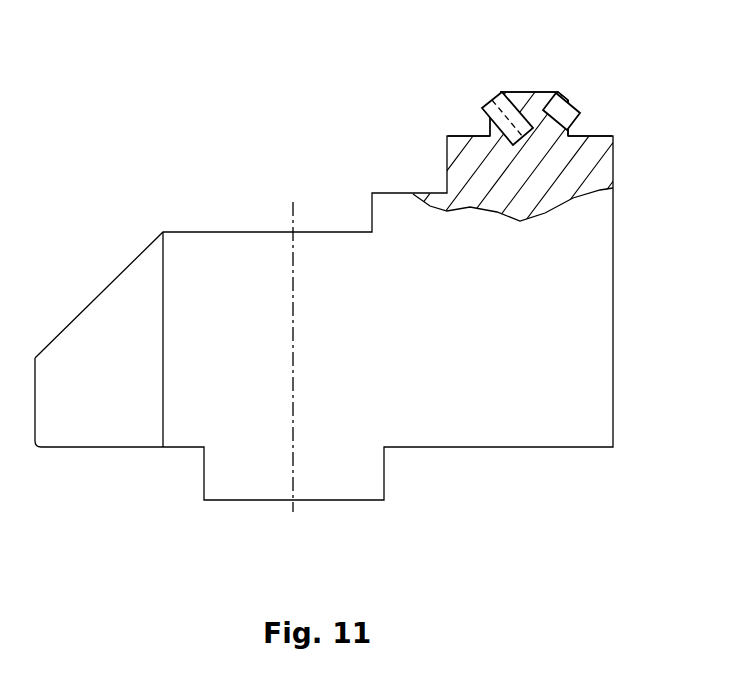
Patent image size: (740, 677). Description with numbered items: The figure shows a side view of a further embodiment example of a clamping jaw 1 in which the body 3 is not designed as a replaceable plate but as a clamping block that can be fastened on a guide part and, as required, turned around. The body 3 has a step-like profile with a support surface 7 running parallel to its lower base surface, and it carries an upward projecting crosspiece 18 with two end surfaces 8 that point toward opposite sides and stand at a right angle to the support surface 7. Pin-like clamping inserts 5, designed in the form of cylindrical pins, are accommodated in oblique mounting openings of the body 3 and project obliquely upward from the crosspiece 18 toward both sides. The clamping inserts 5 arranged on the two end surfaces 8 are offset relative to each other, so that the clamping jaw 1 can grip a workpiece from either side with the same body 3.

The clamping jaw 1 is at (240, 178).
The body 3 is at (467, 385).
The clamping inserts 5 is at (499, 93).
The support surface 7 is at (446, 136).
The end surfaces 8 is at (492, 124).
The crosspiece 18 is at (533, 107).